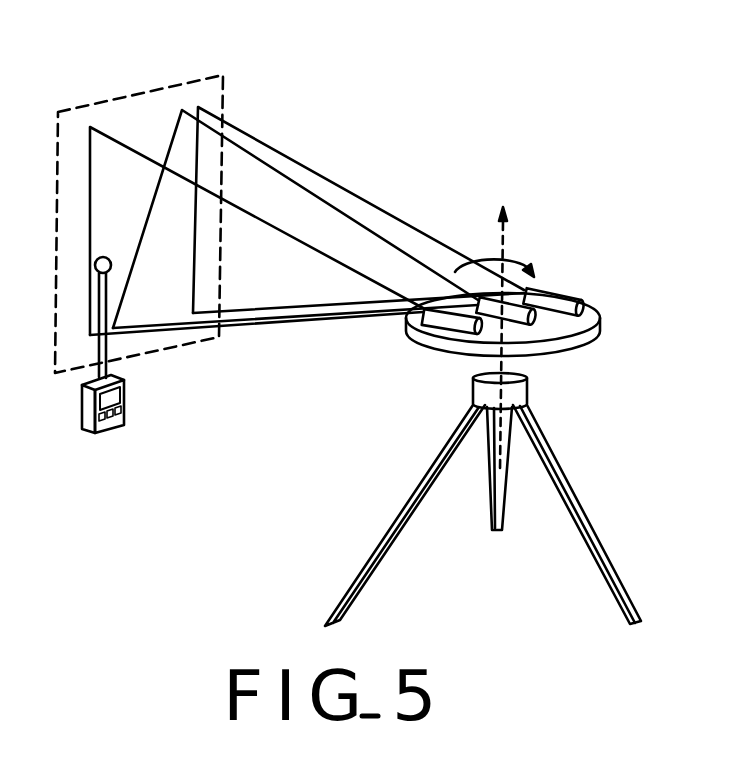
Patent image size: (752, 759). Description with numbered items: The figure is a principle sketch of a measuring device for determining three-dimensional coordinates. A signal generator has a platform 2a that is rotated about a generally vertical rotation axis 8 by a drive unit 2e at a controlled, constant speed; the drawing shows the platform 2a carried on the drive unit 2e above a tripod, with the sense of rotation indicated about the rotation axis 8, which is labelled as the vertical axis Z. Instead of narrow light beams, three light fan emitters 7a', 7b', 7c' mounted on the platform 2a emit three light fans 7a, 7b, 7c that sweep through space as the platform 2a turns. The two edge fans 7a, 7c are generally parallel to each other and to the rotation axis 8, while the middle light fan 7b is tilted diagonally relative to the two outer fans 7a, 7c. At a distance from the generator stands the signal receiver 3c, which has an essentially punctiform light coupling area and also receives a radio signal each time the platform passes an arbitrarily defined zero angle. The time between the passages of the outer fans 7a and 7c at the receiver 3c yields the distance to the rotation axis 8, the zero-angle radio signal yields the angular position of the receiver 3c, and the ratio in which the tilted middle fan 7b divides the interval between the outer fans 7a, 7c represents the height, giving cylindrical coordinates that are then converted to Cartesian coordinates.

The light fan 7a is at (228, 190).
The middle light fan 7b is at (295, 173).
The light fan 7c is at (358, 160).
The light fan emitter 7a' is at (402, 348).
The light fan emitter 7b' is at (475, 245).
The light fan emitter 7c' is at (589, 262).
The signal receiver 3c is at (133, 388).
The platform 2a is at (600, 317).
The drive unit 2e is at (523, 388).
The rotation axis 8 is at (503, 236).
The Z axis of rotation Z is at (502, 322).